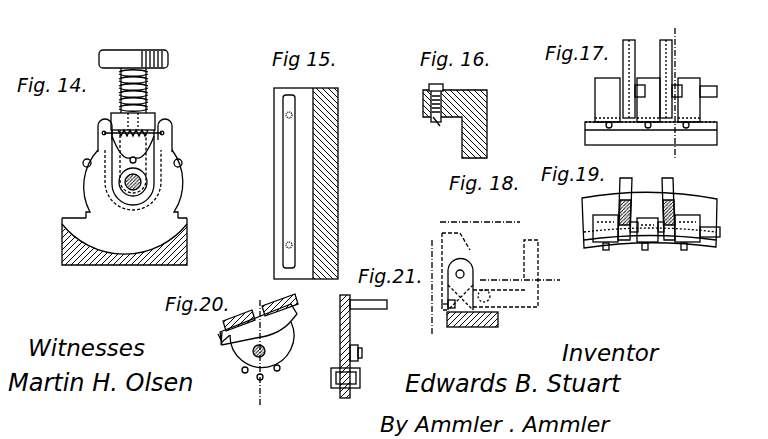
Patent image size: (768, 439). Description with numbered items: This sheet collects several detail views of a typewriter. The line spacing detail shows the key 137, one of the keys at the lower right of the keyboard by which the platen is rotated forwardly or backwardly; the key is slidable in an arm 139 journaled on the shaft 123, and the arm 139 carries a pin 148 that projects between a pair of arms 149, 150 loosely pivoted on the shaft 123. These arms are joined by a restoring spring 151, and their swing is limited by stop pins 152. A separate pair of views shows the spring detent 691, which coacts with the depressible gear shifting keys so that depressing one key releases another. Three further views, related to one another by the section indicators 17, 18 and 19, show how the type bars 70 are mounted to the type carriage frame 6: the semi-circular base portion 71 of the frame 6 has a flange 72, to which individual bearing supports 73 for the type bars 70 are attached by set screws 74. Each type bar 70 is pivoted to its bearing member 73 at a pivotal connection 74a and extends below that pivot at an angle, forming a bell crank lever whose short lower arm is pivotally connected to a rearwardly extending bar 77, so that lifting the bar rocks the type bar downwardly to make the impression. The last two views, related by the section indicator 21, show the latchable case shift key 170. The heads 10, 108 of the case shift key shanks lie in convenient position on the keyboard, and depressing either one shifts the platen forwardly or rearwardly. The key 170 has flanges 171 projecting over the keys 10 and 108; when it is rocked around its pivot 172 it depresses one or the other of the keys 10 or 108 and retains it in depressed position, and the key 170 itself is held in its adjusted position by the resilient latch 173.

In FIG. 14, the line spacing key 137 is at (144, 50).
In FIG. 14, the arm 139 is at (113, 118).
In FIG. 14, the restoring spring 151 is at (140, 128).
In FIG. 14, the arm 149 is at (103, 133).
In FIG. 14, the arm 150 is at (166, 150).
In FIG. 14, the pin 148 is at (128, 158).
In FIG. 14, the shaft 123 is at (135, 192).
In FIG. 14, the stop pins 152 is at (83, 165).
In FIG. 15, the spring detent 691 is at (289, 200).
In FIG. 16, the spring detent 691 is at (432, 119).
In FIG. 17, the type carriage frame 6 is at (592, 145).
In FIG. 19, the type carriage frame 6 is at (702, 195).
In FIG. 18, the type carriage frame 6 is at (498, 322).
In FIG. 17, the semi-circular base portion 71 is at (592, 135).
In FIG. 19, the semi-circular base portion 71 is at (592, 219).
In FIG. 18, the semi-circular base portion 71 is at (471, 328).
In FIG. 17, the flange 72 is at (592, 124).
In FIG. 19, the flange 72 is at (590, 238).
In FIG. 18, the flange 72 is at (478, 305).
In FIG. 17, the bearing support 73 is at (606, 96).
In FIG. 19, the bearing support 73 is at (601, 215).
In FIG. 18, the bearing support 73 is at (476, 285).
In FIG. 17, the type bar 70 is at (631, 44).
In FIG. 19, the type bar 70 is at (624, 243).
In FIG. 18, the type bar 70 is at (463, 269).
In FIG. 17, the rearwardly extending bar 77 is at (638, 58).
In FIG. 19, the rearwardly extending bar 77 is at (664, 185).
In FIG. 17, the set screw 74 is at (609, 129).
In FIG. 19, the set screw 74 is at (606, 250).
In FIG. 18, the set screw 74 is at (446, 305).
In FIG. 19, the pivotal connection 74a is at (634, 222).
In FIG. 18, the pivotal connection 74a is at (487, 290).
In FIG. 17, the section line 18 is at (681, 33).
In FIG. 18, the section line 19 is at (455, 216).
In FIG. 18, the section line 17 is at (426, 245).
In FIG. 18, the section line 21 is at (412, 268).
In FIG. 20, the section line 21 is at (254, 305).
In FIG. 20, the latchable case shift key 170 is at (233, 356).
In FIG. 21, the latchable case shift key 170 is at (351, 335).
In FIG. 20, the case shift key head 10 is at (297, 312).
In FIG. 20, the flange 171 is at (230, 325).
In FIG. 21, the flange 171 is at (371, 300).
In FIG. 20, the case shift key head 108 is at (222, 337).
In FIG. 20, the pivot 172 is at (267, 351).
In FIG. 21, the pivot 172 is at (362, 352).
In FIG. 20, the resilient latch 173 is at (281, 378).
In FIG. 21, the resilient latch 173 is at (361, 378).